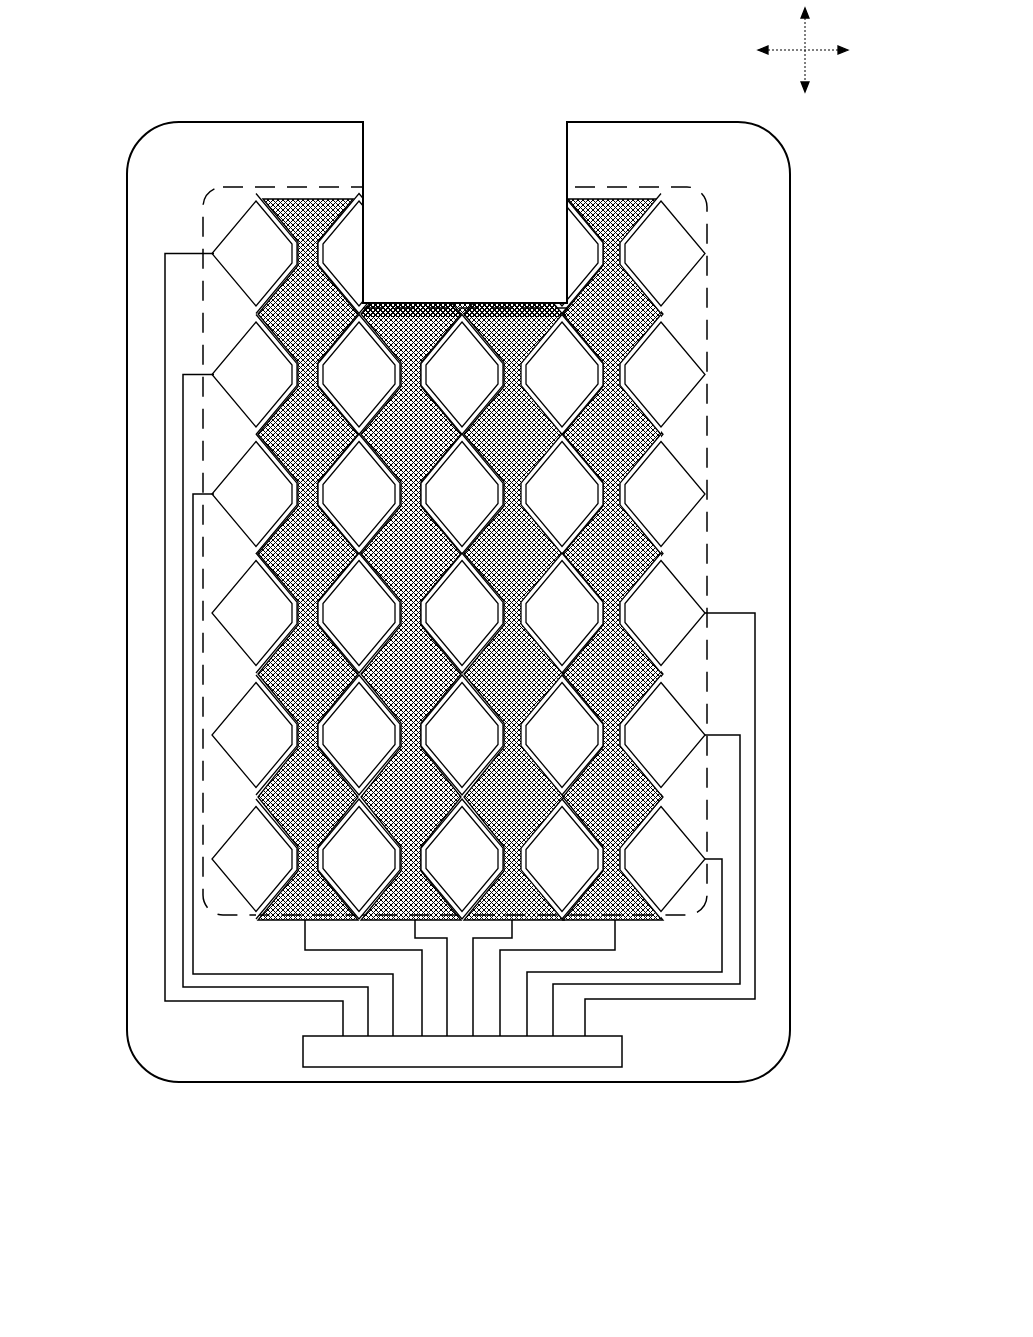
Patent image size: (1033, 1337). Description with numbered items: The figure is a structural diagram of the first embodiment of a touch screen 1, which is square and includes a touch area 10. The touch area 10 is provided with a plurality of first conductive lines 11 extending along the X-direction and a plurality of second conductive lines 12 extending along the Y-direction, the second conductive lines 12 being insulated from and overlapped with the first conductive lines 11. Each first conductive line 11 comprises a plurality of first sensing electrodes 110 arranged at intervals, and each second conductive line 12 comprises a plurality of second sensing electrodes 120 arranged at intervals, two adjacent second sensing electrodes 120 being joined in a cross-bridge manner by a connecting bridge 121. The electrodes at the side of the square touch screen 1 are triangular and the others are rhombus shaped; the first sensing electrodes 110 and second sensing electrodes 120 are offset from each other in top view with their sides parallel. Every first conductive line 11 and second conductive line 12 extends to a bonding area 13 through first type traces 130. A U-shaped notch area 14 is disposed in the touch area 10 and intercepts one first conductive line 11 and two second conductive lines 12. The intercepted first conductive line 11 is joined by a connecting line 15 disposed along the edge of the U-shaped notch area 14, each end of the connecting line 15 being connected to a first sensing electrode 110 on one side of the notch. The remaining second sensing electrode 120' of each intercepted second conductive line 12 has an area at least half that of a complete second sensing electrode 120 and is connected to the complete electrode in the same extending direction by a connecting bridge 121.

The touch screen 1 is at (461, 590).
The touch area 10 is at (437, 478).
The first conductive line 11 is at (461, 541).
The second conductive line 12 is at (303, 160).
The bonding area 13 is at (595, 1040).
The U-shaped notch area 14 is at (441, 245).
The connecting line 15 is at (700, 248).
The first sensing electrode 110 is at (668, 340).
The second sensing electrode 120 is at (461, 540).
The remaining second sensing electrode 120' is at (463, 243).
The connecting bridge 121 is at (238, 343).
The first type trace 130 is at (165, 443).